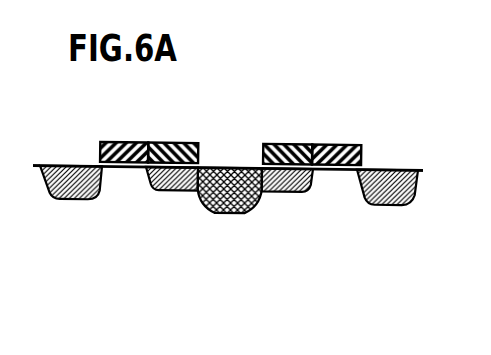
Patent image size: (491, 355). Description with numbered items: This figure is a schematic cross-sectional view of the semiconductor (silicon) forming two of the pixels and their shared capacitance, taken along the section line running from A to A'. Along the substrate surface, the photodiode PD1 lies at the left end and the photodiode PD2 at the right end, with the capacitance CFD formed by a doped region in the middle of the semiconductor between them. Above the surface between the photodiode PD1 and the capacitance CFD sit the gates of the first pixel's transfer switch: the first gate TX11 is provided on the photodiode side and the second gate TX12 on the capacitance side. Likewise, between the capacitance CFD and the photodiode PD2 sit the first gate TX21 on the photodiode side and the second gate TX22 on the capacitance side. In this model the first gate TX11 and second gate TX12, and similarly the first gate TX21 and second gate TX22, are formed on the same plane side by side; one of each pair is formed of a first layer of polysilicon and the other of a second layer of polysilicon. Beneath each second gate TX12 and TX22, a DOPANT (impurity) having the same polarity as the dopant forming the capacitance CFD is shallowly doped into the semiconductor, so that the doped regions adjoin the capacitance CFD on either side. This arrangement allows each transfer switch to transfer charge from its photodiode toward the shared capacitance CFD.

The first gate TX11 is at (128, 143).
The second gate TX12 is at (173, 143).
The first gate TX21 is at (333, 144).
The second gate TX22 is at (288, 144).
The photodiode PD1 is at (71, 201).
The photodiode PD2 is at (390, 203).
The capacitance CFD is at (232, 213).
The dopant DOPANT is at (167, 191).
The section line end point A is at (28, 164).
The section line end point A' is at (435, 171).